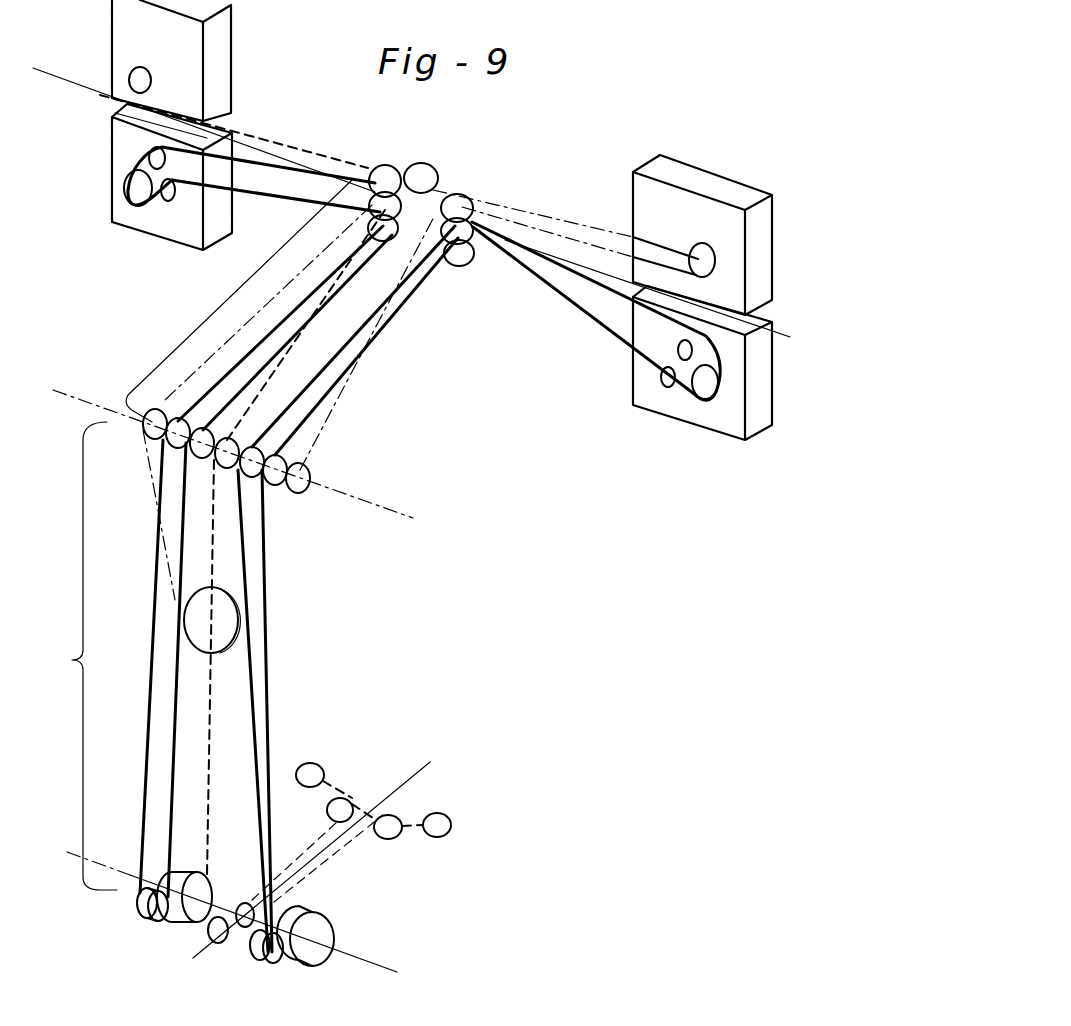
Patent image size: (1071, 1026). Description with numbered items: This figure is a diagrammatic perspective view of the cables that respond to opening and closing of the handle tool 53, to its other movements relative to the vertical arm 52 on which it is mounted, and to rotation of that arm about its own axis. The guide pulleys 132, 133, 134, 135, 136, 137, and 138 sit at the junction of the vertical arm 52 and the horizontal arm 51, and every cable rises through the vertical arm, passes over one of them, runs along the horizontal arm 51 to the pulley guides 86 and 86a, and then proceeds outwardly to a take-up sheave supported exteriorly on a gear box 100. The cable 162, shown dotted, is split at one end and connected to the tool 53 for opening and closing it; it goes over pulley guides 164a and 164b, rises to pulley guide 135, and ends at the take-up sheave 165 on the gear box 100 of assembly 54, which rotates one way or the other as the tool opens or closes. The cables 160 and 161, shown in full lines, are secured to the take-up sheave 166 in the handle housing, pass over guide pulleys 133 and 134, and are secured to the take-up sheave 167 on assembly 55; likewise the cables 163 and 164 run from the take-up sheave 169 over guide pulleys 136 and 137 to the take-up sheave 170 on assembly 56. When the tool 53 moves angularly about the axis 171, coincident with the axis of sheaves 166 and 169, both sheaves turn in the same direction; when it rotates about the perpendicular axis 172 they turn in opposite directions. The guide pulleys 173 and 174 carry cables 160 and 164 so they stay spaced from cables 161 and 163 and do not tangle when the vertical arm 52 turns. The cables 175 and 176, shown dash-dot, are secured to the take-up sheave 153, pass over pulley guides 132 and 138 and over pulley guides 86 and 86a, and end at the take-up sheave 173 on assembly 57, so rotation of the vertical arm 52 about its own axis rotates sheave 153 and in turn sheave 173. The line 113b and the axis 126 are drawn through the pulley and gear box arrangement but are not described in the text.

The horizontal arm 51 is at (237, 290).
The vertical arm 52 is at (77, 656).
The tool 53 is at (383, 783).
The assembly 54 is at (236, 63).
The assembly 55 is at (112, 135).
The assembly 56 is at (630, 363).
The assembly 57 is at (690, 158).
The pulley guides 86 is at (405, 150).
The pulley guide 86a is at (422, 170).
The gear box 100 is at (100, 4).
The axis line 113b is at (52, 52).
The roller axis 126 is at (63, 390).
The guide pulley 132 is at (143, 425).
The guide pulley 133 is at (168, 440).
The guide pulley 134 is at (193, 455).
The guide pulley 135 is at (247, 400).
The guide pulley 136 is at (250, 476).
The guide pulley 137 is at (300, 455).
The guide pulley 138 is at (308, 476).
The take-up sheave 153 is at (215, 592).
The cable 160 is at (244, 166).
The cable 161 is at (245, 193).
The cable 162 is at (278, 139).
The cable 163 is at (557, 297).
The cable 164 is at (588, 283).
The pulley guide 164a is at (242, 905).
The pulley guide 164b is at (208, 940).
The take-up sheave 165 is at (137, 70).
The take-up sheave 166 is at (190, 923).
The take-up sheave 167 is at (133, 182).
The take-up sheave 169 is at (318, 920).
The take-up sheave 170 is at (703, 397).
The axis 171 is at (67, 852).
The axis 172 is at (428, 765).
The guide pulley / take-up sheave 173 is at (727, 227).
The guide pulley 174 is at (267, 962).
The cable 175 is at (550, 223).
The cable 176 is at (515, 192).